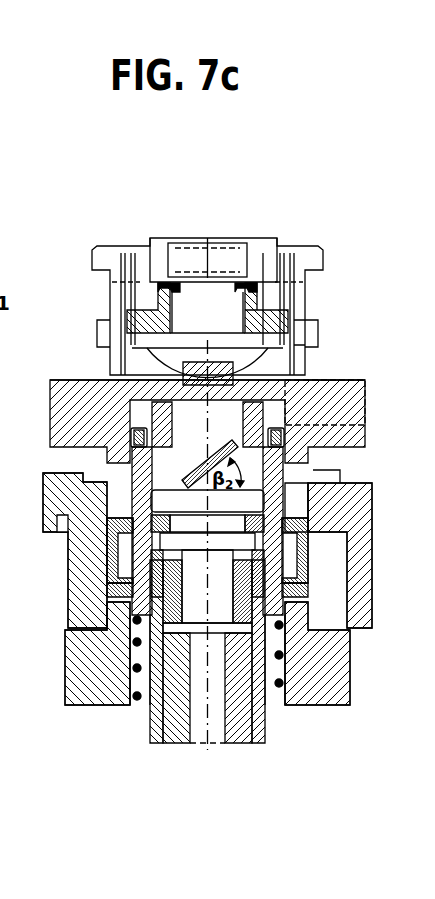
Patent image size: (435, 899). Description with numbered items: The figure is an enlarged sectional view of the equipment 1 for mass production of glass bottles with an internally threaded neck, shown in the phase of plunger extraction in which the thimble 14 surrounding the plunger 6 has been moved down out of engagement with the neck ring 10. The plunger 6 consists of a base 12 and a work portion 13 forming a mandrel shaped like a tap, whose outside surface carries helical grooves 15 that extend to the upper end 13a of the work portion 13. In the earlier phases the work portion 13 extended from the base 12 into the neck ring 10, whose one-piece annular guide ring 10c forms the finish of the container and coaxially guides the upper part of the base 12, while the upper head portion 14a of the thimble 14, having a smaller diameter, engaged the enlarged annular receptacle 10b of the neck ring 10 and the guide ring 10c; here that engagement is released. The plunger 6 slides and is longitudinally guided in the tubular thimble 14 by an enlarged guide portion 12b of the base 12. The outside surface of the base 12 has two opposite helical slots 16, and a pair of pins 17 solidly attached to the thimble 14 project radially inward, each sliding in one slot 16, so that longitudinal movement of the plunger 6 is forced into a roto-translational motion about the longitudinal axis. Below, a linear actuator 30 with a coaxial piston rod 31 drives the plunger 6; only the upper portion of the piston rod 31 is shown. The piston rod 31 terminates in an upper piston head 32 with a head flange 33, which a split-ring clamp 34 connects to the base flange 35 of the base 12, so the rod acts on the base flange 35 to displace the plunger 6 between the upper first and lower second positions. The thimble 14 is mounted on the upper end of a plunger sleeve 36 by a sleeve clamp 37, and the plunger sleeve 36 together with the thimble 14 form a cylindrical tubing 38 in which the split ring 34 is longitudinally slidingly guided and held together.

The equipment 1 is at (343, 236).
The plunger 6 is at (293, 354).
The neck ring 10 is at (310, 358).
The enlarged annular receptacle 10b is at (256, 345).
The one-piece annular guide ring 10c is at (130, 323).
The base 12 is at (288, 476).
The enlarged guide portion 12b is at (135, 502).
The work portion 13 is at (293, 338).
The upper end 13a is at (205, 363).
The thimble 14 is at (287, 462).
The upper head portion 14a is at (290, 424).
The helical grooves 15 is at (148, 330).
The helical slots 16 is at (285, 445).
The pins 17 is at (240, 436).
The linear actuator 30 is at (214, 750).
The piston rod 31 is at (268, 718).
The upper piston head 32 is at (280, 596).
The head flange 33 is at (265, 566).
The clamp 34 is at (262, 553).
The base flange 35 is at (300, 518).
The plunger sleeve 36 is at (350, 690).
The sleeve clamp 37 is at (265, 589).
The cylindrical tubing 38 is at (281, 656).